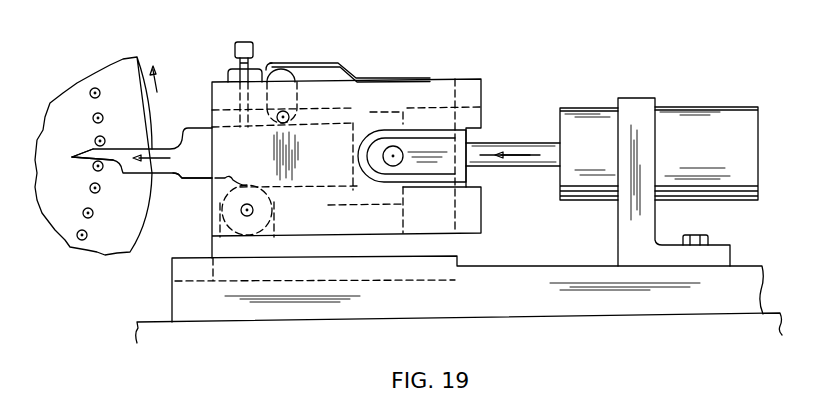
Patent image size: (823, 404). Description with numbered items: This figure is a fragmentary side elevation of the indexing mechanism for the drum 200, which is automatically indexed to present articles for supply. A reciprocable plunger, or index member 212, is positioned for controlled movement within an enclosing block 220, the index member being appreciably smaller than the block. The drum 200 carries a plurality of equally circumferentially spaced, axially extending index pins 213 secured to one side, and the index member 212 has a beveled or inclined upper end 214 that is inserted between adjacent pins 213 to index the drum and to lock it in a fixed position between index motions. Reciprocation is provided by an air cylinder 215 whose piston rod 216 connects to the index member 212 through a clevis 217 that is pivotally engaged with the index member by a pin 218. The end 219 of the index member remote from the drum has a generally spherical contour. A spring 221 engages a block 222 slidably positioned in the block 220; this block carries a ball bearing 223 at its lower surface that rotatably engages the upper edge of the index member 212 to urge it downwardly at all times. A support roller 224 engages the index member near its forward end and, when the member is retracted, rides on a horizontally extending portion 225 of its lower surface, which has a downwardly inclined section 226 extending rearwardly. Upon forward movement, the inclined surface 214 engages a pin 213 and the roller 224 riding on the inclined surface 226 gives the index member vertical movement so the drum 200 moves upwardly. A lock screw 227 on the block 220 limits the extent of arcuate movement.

The drum 200 is at (120, 67).
The index member 212 is at (192, 130).
The index pins 213 is at (99, 97).
The beveled upper end 214 is at (87, 148).
The air cylinder 215 is at (713, 113).
The piston rod 216 is at (522, 147).
The clevis 217 is at (467, 138).
The pin 218 is at (399, 154).
The end of the index member 219 is at (368, 124).
The enclosing block 220 is at (438, 86).
The spring 221 is at (327, 63).
The block 222 is at (265, 63).
The ball bearing 223 is at (291, 118).
The support roller 224 is at (270, 205).
The horizontally extending portion 225 is at (193, 179).
The downwardly inclined section 226 is at (227, 178).
The lock screw 227 is at (255, 47).